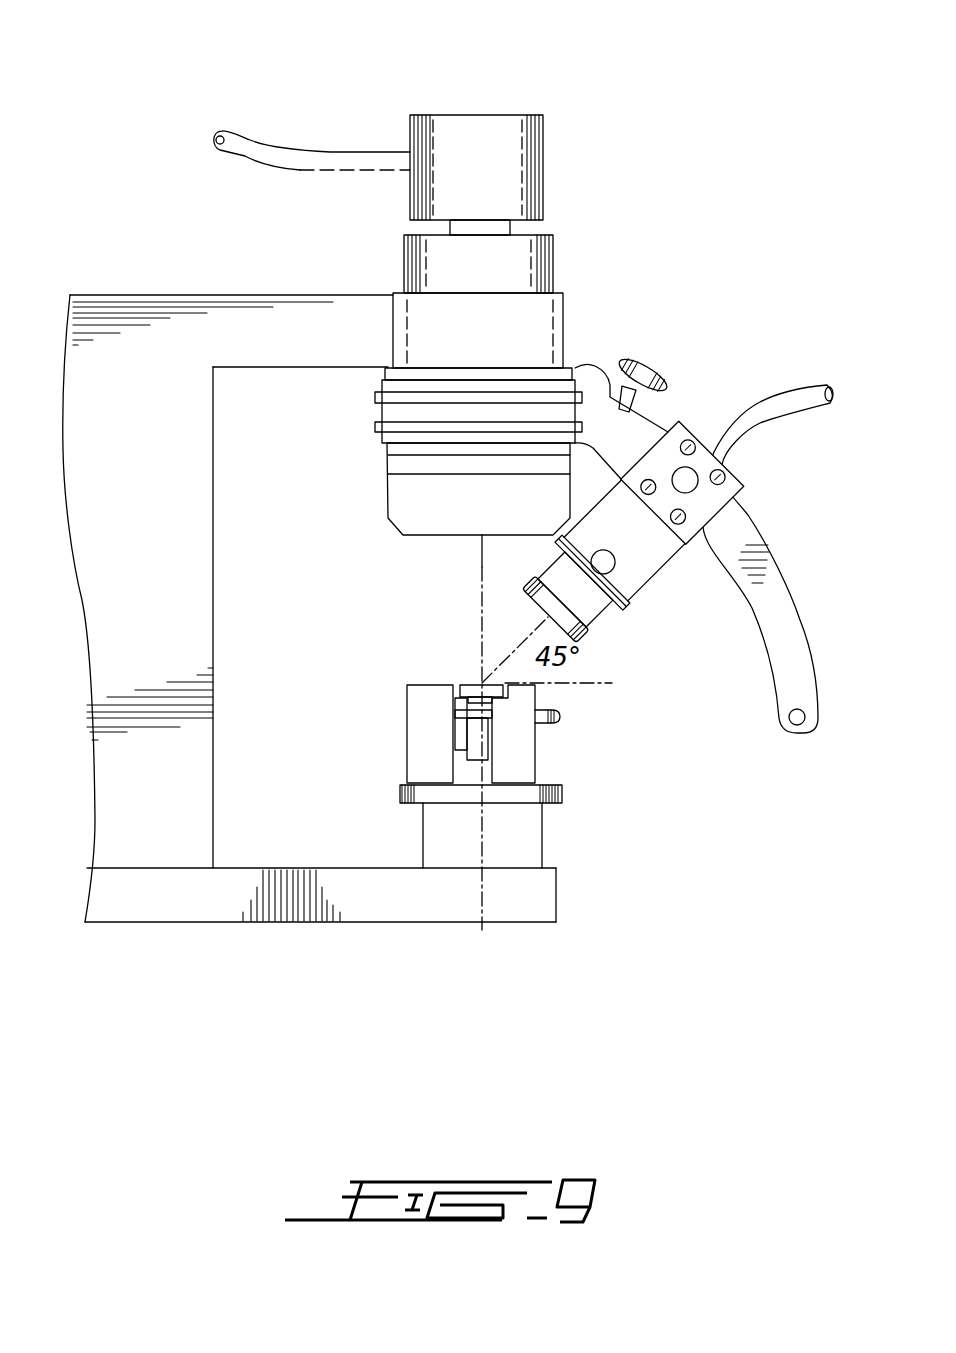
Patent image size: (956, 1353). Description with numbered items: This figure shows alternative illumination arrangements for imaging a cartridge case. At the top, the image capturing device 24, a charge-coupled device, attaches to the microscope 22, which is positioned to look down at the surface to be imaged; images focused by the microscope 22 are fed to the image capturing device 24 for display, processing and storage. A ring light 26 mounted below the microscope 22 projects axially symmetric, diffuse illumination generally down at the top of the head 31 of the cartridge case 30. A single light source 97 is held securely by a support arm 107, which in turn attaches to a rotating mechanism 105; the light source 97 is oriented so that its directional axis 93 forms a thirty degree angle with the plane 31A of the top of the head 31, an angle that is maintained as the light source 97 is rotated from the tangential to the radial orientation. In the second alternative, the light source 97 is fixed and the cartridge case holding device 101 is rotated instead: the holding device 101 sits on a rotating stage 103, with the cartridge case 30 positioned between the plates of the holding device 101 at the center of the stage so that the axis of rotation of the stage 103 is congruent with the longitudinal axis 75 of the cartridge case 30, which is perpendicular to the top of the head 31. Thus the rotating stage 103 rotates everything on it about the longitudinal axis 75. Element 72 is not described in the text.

The image capturing device 24 is at (478, 115).
The microscope 22 is at (553, 258).
The rotating mechanism 105 is at (568, 368).
The ring light 26 is at (387, 497).
The optical axis 72 is at (480, 569).
The directional axis 93 is at (517, 650).
The head of cartridge case 31 is at (466, 685).
The plane of the top of the head 31A is at (497, 683).
The light source 97 is at (658, 578).
The support arm 107 is at (766, 532).
The cartridge case holding device 101 is at (372, 701).
The cartridge case 30 is at (477, 738).
The rotating stage 103 is at (596, 840).
The longitudinal axis 75 is at (484, 888).